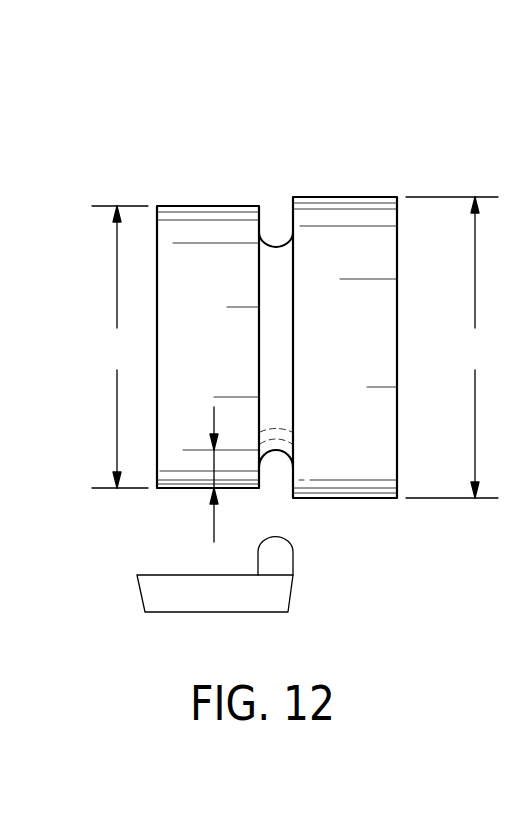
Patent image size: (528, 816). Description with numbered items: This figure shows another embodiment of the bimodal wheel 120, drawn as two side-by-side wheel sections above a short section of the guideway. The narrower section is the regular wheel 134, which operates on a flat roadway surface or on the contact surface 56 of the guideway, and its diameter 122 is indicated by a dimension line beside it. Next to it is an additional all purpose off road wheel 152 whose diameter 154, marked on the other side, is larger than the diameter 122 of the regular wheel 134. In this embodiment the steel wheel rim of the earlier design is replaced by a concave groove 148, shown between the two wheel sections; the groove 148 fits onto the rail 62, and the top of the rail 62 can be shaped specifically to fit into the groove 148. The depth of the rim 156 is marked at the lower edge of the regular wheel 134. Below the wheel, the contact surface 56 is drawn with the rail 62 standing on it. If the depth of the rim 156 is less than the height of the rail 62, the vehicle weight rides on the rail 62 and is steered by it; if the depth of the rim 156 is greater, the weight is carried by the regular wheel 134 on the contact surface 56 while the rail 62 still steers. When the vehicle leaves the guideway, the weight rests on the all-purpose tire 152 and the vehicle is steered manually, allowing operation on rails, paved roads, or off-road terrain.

The bimodal wheel 120 is at (307, 270).
The regular wheel 134 is at (187, 228).
The concave groove 148 is at (268, 240).
The all purpose off road wheel 152 is at (372, 196).
The diameter of the regular wheel 122 is at (120, 347).
The diameter of the off road wheel 154 is at (452, 347).
The depth of the rim 156 is at (212, 467).
The contact surface 56 is at (173, 575).
The rail 62 is at (288, 557).